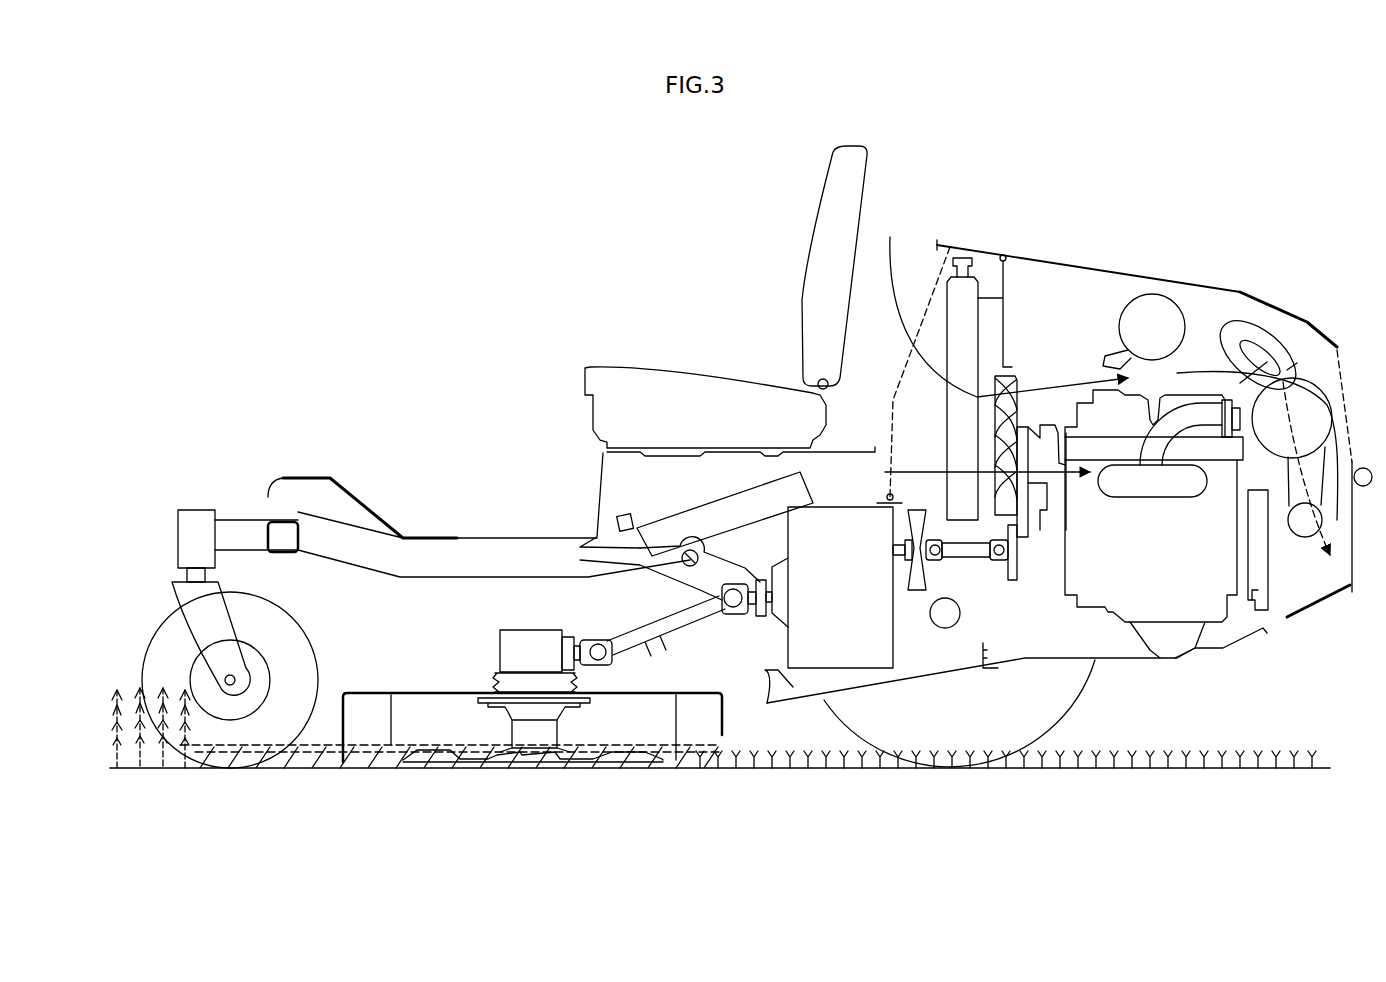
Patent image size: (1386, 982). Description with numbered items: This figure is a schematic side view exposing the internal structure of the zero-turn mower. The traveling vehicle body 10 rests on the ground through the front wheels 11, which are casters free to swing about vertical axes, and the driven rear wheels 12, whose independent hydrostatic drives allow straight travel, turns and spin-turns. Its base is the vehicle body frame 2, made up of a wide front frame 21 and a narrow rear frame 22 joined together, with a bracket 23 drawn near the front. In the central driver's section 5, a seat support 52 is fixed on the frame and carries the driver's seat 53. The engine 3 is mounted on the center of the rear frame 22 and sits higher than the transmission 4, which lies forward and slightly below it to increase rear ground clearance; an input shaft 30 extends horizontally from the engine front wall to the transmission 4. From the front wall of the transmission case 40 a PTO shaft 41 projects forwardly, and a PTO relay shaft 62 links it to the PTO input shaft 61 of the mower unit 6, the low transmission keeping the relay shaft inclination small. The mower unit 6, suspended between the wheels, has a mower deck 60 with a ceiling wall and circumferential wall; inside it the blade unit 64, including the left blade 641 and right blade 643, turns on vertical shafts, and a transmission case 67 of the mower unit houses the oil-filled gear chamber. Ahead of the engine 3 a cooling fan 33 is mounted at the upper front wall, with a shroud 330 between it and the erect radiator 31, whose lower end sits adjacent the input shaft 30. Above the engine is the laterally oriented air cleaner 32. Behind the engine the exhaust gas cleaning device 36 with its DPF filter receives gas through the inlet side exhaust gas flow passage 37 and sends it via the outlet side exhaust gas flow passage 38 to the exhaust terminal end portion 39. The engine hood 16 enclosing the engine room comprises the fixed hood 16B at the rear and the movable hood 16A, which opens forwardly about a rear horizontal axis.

The driver's section 5 is at (527, 225).
The traveling vehicle body 10 is at (228, 480).
The front wheels 11 is at (232, 770).
The rear wheels 12 is at (972, 762).
The vehicle body frame 2 is at (782, 594).
The front frame 21 is at (428, 577).
The rear frame 22 is at (1040, 645).
The connecting bracket 23 is at (290, 553).
The engine 3 is at (1140, 578).
The input shaft 30 is at (963, 557).
The radiator 31 is at (957, 285).
The air cleaner 32 is at (1160, 302).
The cooling fan 33 is at (1005, 383).
The shroud 330 is at (1005, 318).
The exhaust gas cleaning device 36 is at (1318, 403).
The inlet side exhaust gas flow passage 37 is at (1163, 455).
The outlet side exhaust gas flow passage 38 is at (1232, 315).
The exhaust terminal end portion 39 is at (1303, 546).
The engine hood 16 is at (1154, 393).
The movable hood 16A is at (1077, 262).
The fixed hood 16B is at (1277, 308).
The transmission 4 is at (900, 657).
The transmission case 40 is at (853, 655).
The PTO shaft 41 is at (770, 614).
The seat support 52 is at (612, 518).
The driver's seat 53 is at (872, 152).
The mower unit 6 is at (412, 683).
The mower deck 60 is at (618, 694).
The PTO input shaft 61 is at (583, 645).
The PTO relay shaft 62 is at (674, 622).
The blade unit 64 is at (592, 766).
The left blade 641 is at (460, 775).
The right blade 643 is at (533, 795).
The transmission case 67 is at (530, 642).